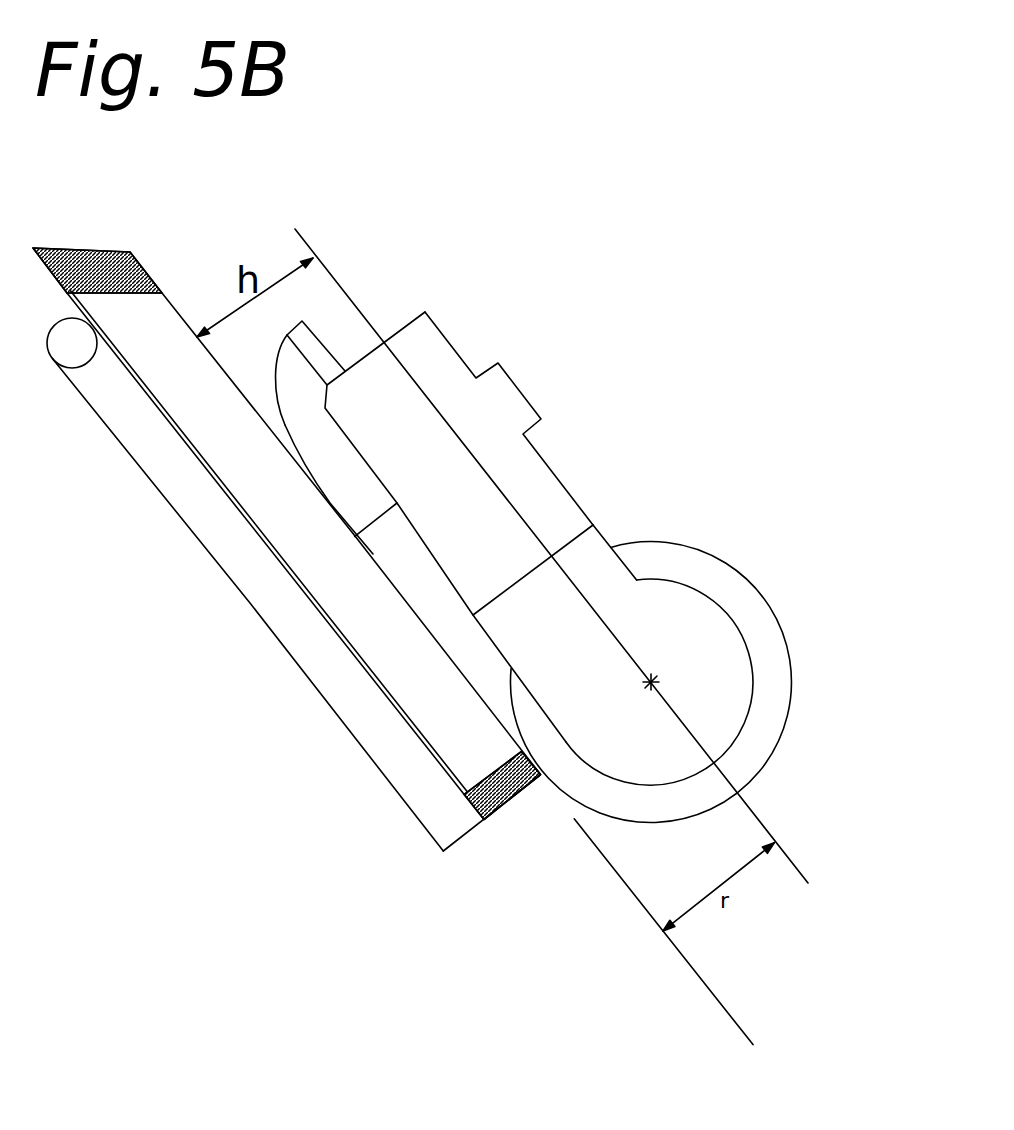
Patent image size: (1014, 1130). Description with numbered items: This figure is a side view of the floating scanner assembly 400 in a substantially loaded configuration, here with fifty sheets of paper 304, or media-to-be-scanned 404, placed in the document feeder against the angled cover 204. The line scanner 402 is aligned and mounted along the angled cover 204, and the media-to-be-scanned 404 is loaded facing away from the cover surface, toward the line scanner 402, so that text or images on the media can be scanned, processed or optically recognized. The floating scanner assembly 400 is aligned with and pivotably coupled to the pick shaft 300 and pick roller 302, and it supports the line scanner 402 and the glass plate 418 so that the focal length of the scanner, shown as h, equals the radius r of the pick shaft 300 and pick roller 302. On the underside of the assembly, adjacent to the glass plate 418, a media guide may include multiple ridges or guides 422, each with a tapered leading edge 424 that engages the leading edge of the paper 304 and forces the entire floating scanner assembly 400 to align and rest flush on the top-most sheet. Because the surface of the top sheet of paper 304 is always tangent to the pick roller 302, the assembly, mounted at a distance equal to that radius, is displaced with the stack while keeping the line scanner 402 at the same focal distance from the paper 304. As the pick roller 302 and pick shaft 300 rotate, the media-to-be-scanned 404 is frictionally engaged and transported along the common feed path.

The angled cover 204 is at (195, 481).
The paper 304 is at (136, 264).
The media-to-be-scanned 404 is at (136, 264).
The floating scanner assembly 400 is at (538, 302).
The line scanner 402 is at (533, 447).
The pick roller 302 is at (732, 562).
The pick shaft 300 is at (710, 713).
The glass plate 418 is at (397, 580).
The tapered leading edge 424 is at (279, 400).
The guides 422 is at (356, 478).